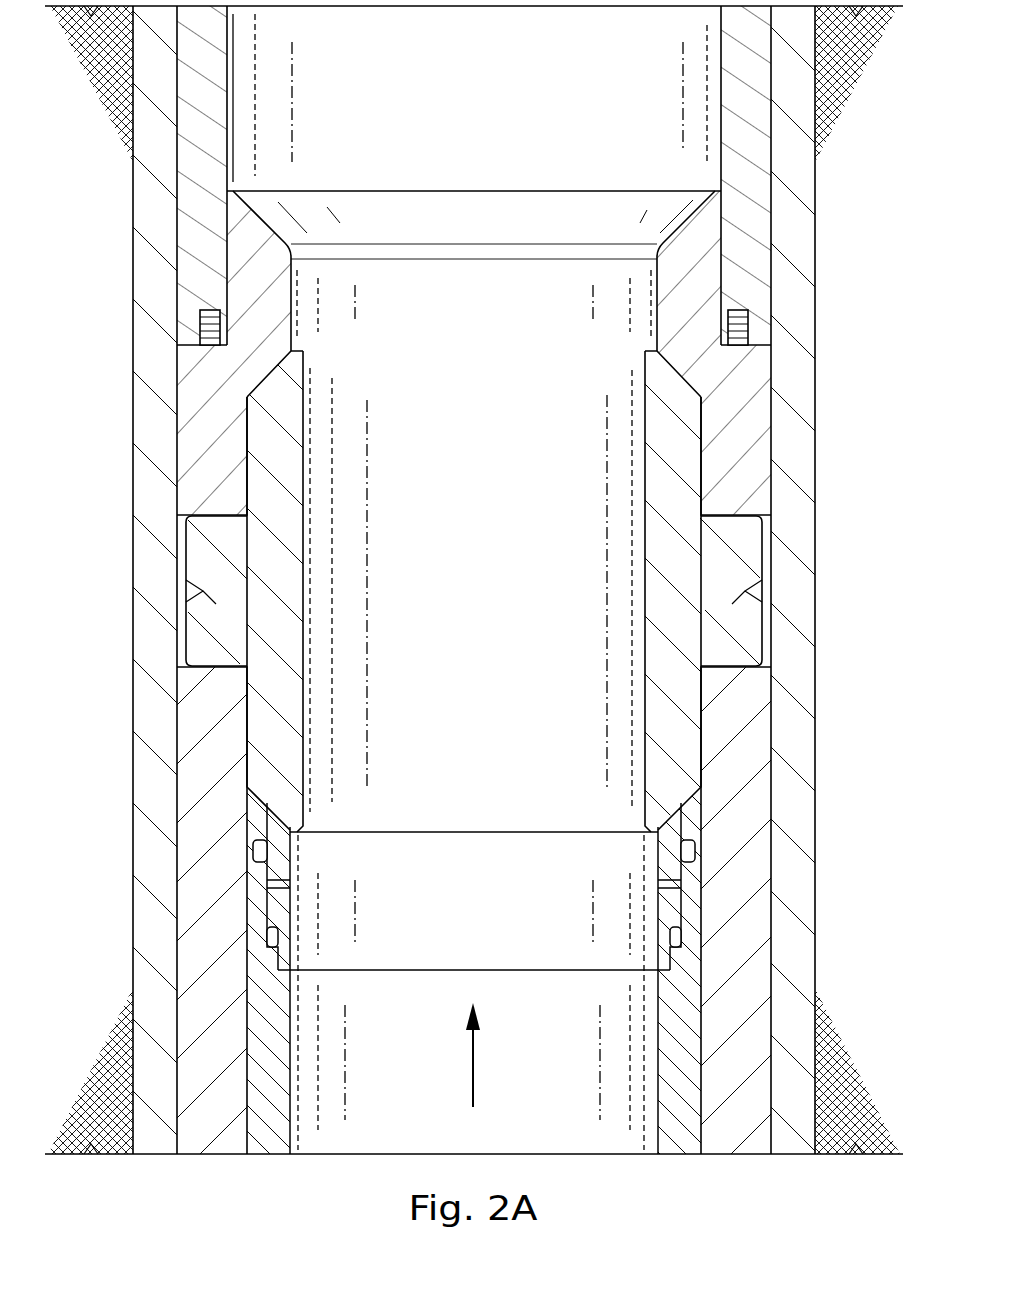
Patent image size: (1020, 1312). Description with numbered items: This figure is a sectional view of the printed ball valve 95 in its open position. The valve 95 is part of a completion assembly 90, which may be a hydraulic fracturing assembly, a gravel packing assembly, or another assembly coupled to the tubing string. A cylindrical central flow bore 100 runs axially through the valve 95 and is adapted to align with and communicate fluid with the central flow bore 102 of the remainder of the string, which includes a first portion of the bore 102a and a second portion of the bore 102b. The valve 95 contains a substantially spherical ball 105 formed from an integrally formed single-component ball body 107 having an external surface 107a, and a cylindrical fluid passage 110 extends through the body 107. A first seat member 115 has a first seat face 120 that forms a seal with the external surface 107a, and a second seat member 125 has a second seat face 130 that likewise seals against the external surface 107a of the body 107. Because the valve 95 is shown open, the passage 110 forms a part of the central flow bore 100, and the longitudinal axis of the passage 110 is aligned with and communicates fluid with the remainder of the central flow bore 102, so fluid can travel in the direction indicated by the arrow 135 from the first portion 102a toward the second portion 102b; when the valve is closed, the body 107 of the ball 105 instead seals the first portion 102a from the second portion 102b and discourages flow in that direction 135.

The completion assembly 90 is at (808, 232).
The printed ball valve 95 is at (842, 353).
The central flow bore 100 is at (398, 281).
The central flow bore of the remainder of the string 102 is at (495, 82).
The first portion of the bore 102a is at (390, 1063).
The second portion of the bore 102b is at (550, 123).
The ball 105 is at (748, 578).
The ball body 107 is at (197, 615).
The external surface 107a is at (282, 847).
The fluid passage 110 is at (495, 605).
The first seat member 115 is at (670, 903).
The first seat face 120 is at (662, 802).
The second seat member 125 is at (750, 408).
The second seat face 130 is at (682, 388).
The fluid flow direction 135 is at (478, 1078).